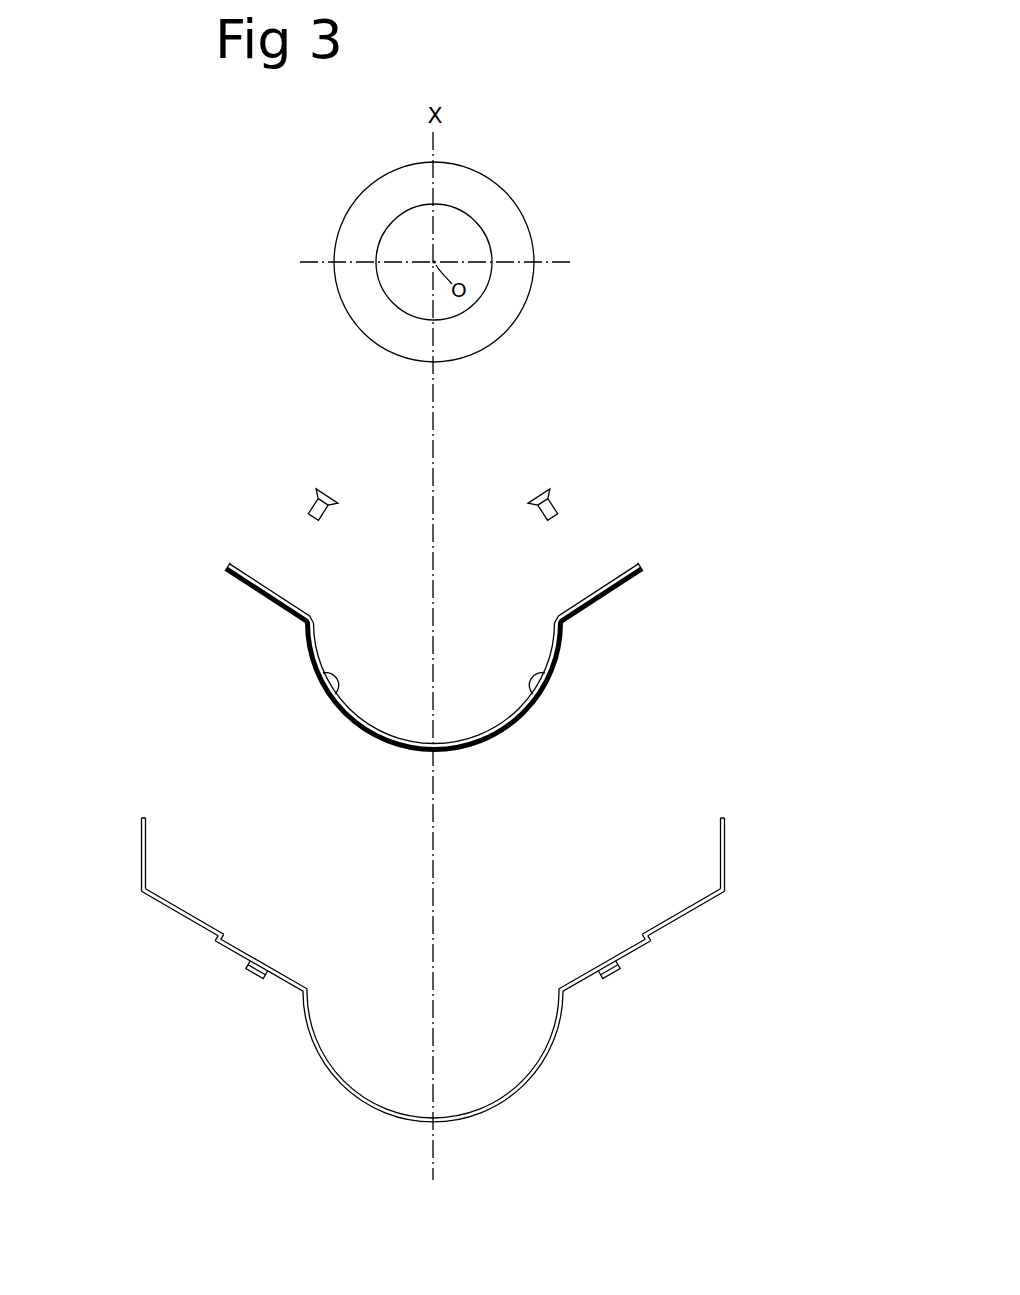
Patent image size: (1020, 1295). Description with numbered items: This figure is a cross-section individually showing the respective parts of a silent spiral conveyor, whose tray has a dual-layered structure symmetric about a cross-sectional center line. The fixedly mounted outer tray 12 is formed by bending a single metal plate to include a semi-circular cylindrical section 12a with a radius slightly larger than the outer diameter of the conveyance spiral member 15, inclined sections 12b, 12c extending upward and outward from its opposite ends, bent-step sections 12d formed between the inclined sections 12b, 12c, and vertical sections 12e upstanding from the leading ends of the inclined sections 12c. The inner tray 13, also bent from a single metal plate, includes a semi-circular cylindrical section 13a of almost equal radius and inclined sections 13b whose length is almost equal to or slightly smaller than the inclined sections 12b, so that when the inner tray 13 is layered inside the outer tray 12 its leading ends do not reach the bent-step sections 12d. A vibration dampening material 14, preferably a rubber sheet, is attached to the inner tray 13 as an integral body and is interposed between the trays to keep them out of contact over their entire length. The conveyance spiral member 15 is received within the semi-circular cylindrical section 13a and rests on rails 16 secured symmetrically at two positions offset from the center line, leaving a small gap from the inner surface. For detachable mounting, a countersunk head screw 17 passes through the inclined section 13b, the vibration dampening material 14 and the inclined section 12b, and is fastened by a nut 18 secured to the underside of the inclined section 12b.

The outer tray 12 is at (437, 1002).
The semi-circular cylindrical section 12a is at (478, 1122).
The inclined section 12b is at (233, 956).
The inclined section 12c is at (185, 911).
The bent-step section 12d is at (208, 937).
The vertical section 12e is at (150, 842).
The inner tray 13 is at (410, 603).
The semi-circular cylindrical section 13a is at (367, 722).
The inclined section 13b is at (282, 599).
The vibration dampening material 14 is at (262, 636).
The conveyance spiral member 15 is at (335, 172).
The rail 16 is at (332, 672).
The countersunk head screw 17 is at (313, 478).
The nut 18 is at (258, 987).